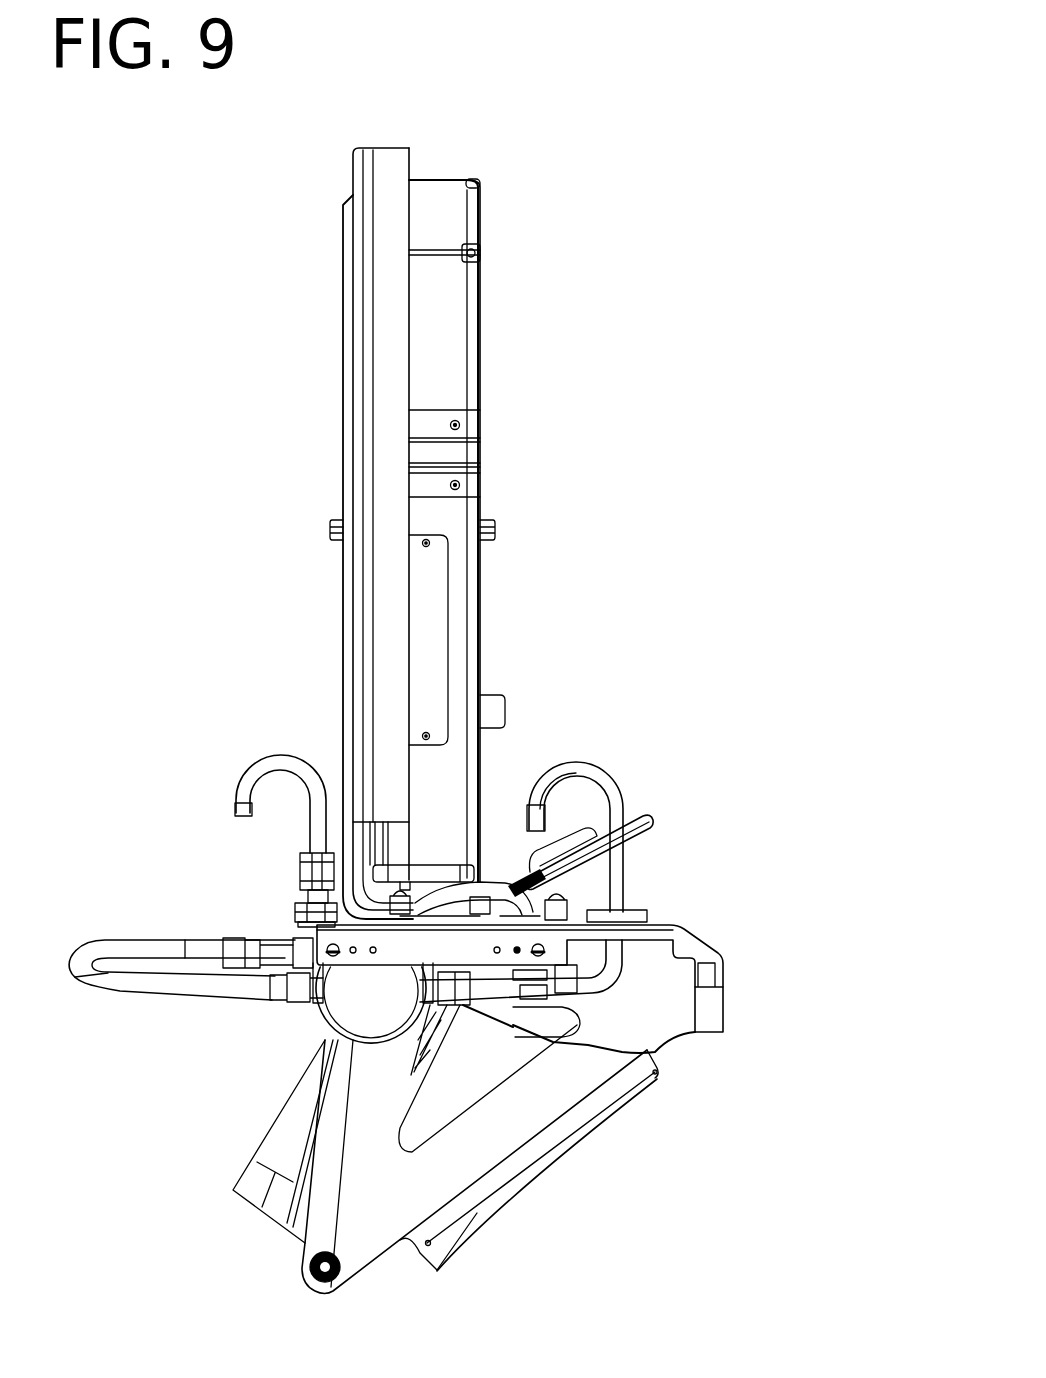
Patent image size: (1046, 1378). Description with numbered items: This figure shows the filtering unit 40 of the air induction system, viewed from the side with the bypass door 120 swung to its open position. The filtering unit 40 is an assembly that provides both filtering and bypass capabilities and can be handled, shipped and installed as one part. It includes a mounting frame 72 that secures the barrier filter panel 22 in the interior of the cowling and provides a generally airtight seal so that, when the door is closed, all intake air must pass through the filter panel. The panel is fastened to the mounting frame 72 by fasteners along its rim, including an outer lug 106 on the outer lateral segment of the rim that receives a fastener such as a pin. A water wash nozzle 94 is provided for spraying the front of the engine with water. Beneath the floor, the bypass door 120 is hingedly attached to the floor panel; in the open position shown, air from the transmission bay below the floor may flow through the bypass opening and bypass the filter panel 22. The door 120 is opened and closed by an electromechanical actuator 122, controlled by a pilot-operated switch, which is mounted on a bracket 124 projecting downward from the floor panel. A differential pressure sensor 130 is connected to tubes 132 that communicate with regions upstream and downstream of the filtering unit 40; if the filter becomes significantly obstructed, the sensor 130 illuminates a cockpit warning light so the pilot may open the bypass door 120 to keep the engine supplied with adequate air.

The filtering unit 40 is at (452, 179).
The mounting frame 72 is at (341, 588).
The outer lug 106 is at (467, 438).
The barrier filter panel 22 is at (481, 595).
The water wash nozzle 94 is at (506, 705).
The tubes 132 is at (252, 772).
The bypass door 120 is at (645, 828).
The differential pressure sensor 130 is at (317, 1027).
The electromechanical actuator 122 is at (652, 1052).
The bracket 124 is at (600, 1113).